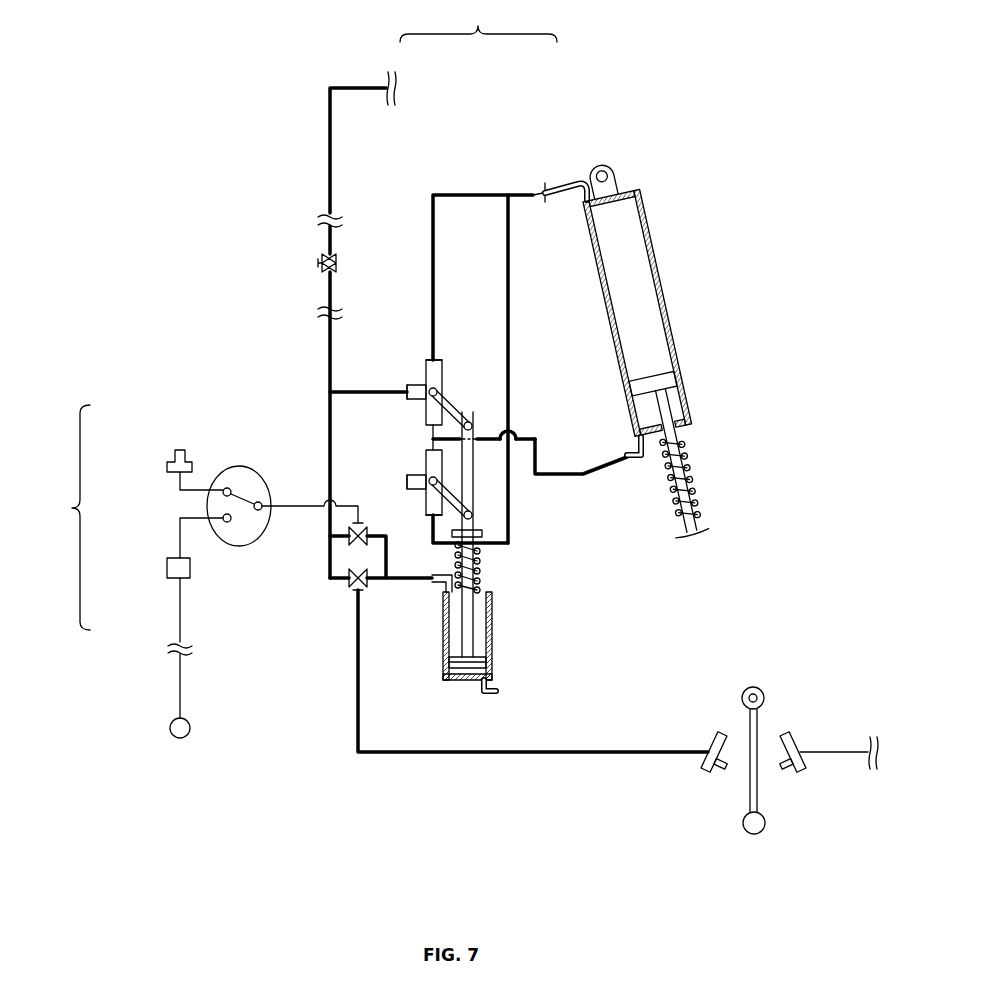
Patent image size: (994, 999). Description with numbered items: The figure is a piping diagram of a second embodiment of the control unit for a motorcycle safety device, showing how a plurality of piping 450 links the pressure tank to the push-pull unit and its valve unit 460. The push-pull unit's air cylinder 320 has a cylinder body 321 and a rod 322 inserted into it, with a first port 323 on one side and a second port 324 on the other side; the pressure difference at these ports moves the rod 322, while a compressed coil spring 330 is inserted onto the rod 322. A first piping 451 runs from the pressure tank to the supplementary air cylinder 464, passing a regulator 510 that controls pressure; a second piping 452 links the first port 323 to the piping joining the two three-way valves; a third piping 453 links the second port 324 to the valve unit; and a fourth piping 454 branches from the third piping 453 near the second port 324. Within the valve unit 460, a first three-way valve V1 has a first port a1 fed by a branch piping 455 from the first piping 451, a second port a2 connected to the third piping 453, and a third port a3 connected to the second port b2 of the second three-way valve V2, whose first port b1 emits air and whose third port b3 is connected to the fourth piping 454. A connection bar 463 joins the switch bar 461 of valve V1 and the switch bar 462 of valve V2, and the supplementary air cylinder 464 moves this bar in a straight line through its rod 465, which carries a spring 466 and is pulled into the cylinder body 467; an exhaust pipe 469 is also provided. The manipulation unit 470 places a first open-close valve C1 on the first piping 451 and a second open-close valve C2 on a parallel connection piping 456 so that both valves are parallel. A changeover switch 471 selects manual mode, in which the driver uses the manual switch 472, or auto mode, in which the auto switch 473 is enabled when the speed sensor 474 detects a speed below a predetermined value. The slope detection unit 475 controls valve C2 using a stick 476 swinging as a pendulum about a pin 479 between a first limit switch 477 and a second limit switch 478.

The air cylinder 320 is at (672, 290).
The cylinder body 321 is at (637, 312).
The rod 322 is at (653, 383).
The first port 323 is at (632, 410).
The second port 324 is at (603, 181).
The spring 330 is at (676, 462).
The piping 450 is at (478, 21).
The first piping 451 is at (331, 290).
The second piping 452 is at (528, 430).
The third piping 453 is at (430, 195).
The fourth piping 454 is at (505, 225).
The branch piping 455 is at (358, 394).
The parallel connection piping 456 is at (388, 560).
The regulator 510 is at (316, 252).
The first 3 way valve V1 is at (410, 380).
The second 3 way valve V2 is at (410, 470).
The first port of the first 3 way valve a1 is at (407, 390).
The second port of the first 3 way valve a2 is at (438, 360).
The third port of the first 3 way valve a3 is at (414, 383).
The first port of the second 3 way valve b1 is at (407, 482).
The second port of the second 3 way valve b2 is at (419, 450).
The third port of the second 3 way valve b3 is at (441, 518).
The first open-close valve C1 is at (345, 548).
The second open-close valve C2 is at (348, 590).
The valve unit 460 is at (557, 650).
The switch bar of the first 3 way valve 461 is at (468, 410).
The switch bar of the second 3 way valve 462 is at (470, 508).
The connection bar 463 is at (470, 480).
The supplementary air cylinder 464 is at (495, 662).
The rod 465 is at (485, 578).
The spring 466 is at (472, 560).
The cylinder body 467 is at (443, 655).
The exhaust pipe 469 is at (487, 697).
The manipulation unit 470 is at (155, 571).
The changeover switch 471 is at (197, 505).
The manual switch 472 is at (168, 452).
The auto switch 473 is at (165, 560).
The speed sensor 474 is at (165, 712).
The slope detection unit 475 is at (725, 790).
The stick 476 is at (758, 792).
The first limit switch 477 is at (713, 738).
The second limit switch 478 is at (796, 738).
The pin 479 is at (752, 686).